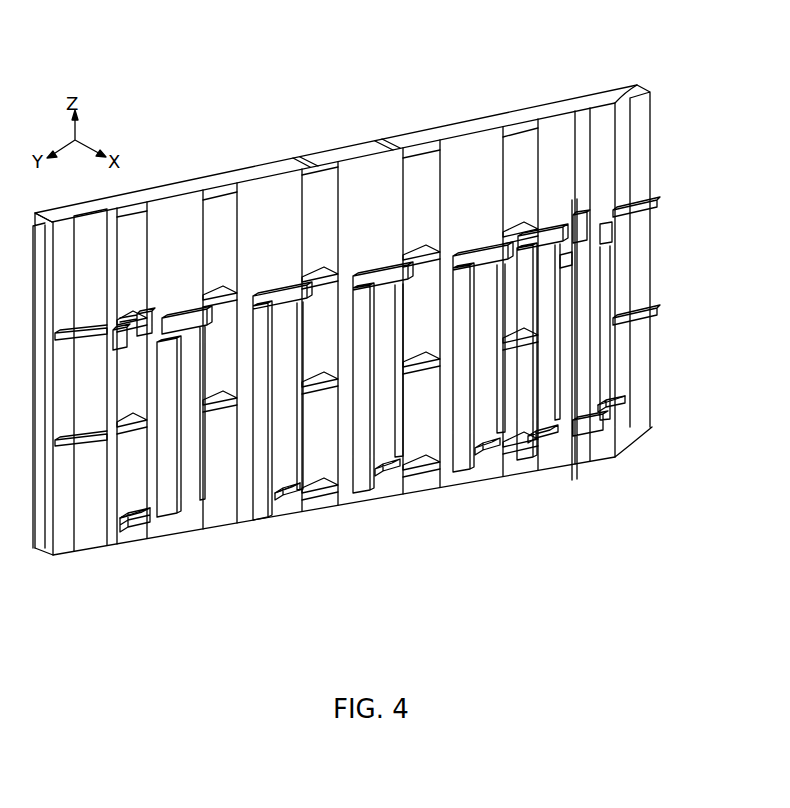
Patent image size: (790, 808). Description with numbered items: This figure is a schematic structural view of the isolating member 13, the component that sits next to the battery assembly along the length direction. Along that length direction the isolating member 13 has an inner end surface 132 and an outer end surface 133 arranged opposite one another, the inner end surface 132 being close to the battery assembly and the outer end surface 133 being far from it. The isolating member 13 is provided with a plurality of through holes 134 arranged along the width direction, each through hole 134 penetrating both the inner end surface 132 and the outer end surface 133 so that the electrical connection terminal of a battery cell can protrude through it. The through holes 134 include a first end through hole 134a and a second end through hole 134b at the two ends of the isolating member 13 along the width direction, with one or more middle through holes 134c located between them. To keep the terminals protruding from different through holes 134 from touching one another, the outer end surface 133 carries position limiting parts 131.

The isolating member 13 is at (236, 60).
The position limiting part 131 is at (172, 512).
The inner end surface 132 is at (393, 137).
The outer end surface 133 is at (558, 122).
The through hole 134 is at (665, 480).
The first end through hole 134a is at (120, 530).
The second end through hole 134b is at (608, 412).
The middle through hole 134c is at (302, 498).